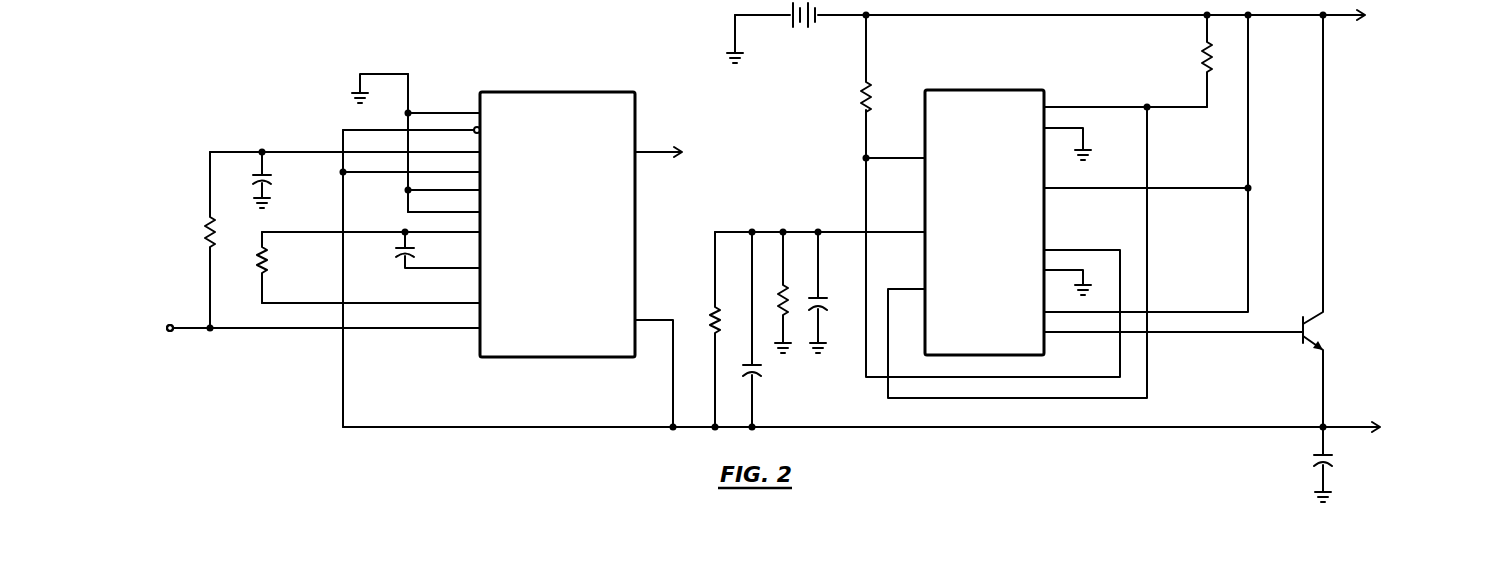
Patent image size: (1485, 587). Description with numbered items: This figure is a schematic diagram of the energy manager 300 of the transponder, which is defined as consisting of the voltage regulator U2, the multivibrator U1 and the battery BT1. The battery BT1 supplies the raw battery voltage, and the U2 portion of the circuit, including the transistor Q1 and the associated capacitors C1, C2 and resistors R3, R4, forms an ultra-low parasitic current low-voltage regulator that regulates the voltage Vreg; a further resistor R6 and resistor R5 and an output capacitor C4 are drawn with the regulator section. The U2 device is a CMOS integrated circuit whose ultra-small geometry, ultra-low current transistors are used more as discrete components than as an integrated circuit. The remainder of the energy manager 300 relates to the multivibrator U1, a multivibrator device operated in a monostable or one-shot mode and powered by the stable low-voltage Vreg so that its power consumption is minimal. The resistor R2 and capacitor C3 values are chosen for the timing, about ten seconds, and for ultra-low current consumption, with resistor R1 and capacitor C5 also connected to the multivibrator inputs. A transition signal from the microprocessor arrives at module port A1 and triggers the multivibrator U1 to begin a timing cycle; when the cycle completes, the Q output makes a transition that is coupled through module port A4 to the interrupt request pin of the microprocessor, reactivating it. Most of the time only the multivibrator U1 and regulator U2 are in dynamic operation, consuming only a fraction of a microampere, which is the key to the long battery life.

The energy manager 300 is at (805, 128).
The resistor R1 is at (222, 240).
The resistor R2 is at (274, 267).
The resistor R3 is at (726, 329).
The resistor R4 is at (793, 292).
The resistor R5 is at (1193, 61).
The resistor R6 is at (878, 63).
The capacitor C1 is at (760, 329).
The capacitor C2 is at (827, 292).
The capacitor C3 is at (438, 250).
The capacitor C4 is at (1338, 464).
The capacitor C5 is at (274, 180).
The battery BT1 is at (804, 28).
The multivibrator U1 is at (622, 122).
The voltage regulator U2 is at (963, 117).
The transistor Q1 is at (1326, 221).
The module port A1 is at (167, 317).
The module port A4 is at (683, 153).